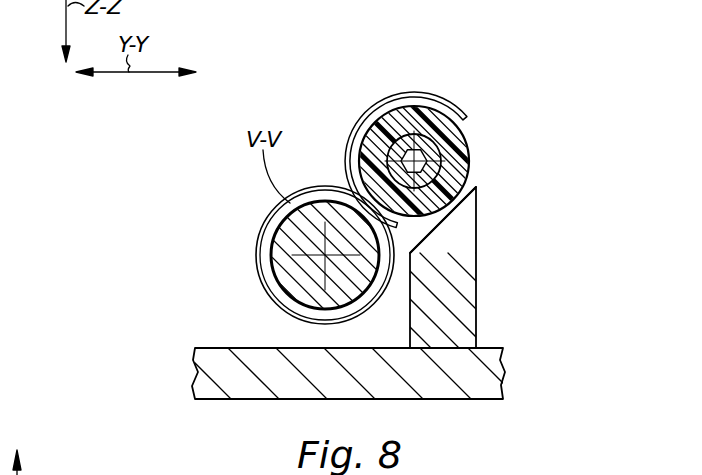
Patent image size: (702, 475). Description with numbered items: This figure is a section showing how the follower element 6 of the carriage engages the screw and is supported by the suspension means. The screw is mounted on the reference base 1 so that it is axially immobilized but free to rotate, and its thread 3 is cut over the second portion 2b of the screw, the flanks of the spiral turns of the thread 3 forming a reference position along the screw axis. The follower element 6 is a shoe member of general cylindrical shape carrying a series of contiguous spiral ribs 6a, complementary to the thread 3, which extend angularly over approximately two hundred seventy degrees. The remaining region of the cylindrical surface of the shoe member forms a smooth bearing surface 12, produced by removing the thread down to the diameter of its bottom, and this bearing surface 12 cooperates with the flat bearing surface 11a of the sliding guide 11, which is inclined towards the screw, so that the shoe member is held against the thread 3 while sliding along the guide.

The reference base 1 is at (470, 377).
The second portion of the screw 2b is at (293, 241).
The thread 3 is at (270, 295).
The follower element 6 is at (455, 159).
The contiguous ribs 6a is at (416, 95).
The sliding guide 11 is at (450, 302).
The flat bearing surface 11a is at (425, 228).
The cylindrical bearing surface 12 is at (480, 168).